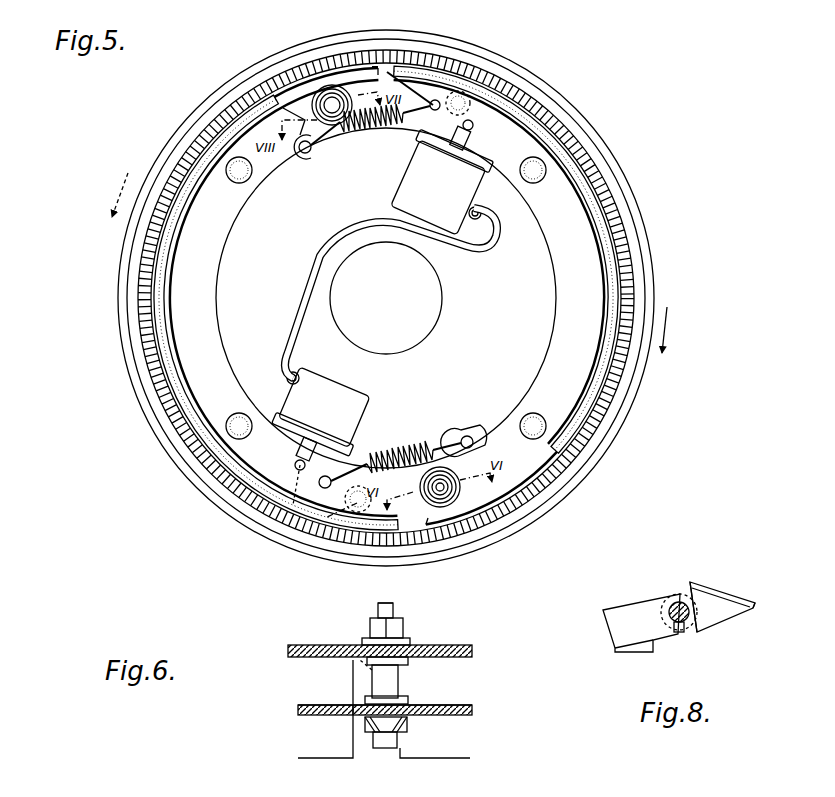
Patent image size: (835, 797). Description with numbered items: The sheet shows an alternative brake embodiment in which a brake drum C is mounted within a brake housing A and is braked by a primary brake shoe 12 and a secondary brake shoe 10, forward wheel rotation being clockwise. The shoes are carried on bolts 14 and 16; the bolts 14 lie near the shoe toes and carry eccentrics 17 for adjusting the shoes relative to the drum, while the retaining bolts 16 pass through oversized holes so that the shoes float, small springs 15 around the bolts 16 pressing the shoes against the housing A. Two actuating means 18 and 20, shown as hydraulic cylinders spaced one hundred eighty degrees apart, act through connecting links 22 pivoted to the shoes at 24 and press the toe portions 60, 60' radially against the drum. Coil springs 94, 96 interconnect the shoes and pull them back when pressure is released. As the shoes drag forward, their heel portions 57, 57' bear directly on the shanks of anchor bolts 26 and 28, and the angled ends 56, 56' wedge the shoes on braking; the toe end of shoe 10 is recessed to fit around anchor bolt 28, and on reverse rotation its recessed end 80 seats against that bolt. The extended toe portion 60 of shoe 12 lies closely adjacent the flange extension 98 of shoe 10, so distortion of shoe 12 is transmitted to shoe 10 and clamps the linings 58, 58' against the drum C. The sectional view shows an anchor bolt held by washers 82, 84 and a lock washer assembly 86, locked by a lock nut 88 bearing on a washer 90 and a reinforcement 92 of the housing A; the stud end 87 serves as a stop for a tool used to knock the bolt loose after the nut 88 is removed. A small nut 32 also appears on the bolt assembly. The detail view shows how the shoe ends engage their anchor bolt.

In FIG. 5, the secondary brake shoe 10 is at (182, 332).
In FIG. 6, the secondary brake shoe 10 is at (330, 760).
In FIG. 8, the secondary brake shoe 10 is at (625, 603).
In FIG. 5, the primary brake shoe 12 is at (583, 227).
In FIG. 6, the primary brake shoe 12 is at (420, 760).
In FIG. 8, the primary brake shoe 12 is at (730, 620).
In FIG. 5, the bolt 14 is at (488, 90).
In FIG. 5, the spring 15 is at (303, 155).
In FIG. 5, the retaining bolt 16 is at (249, 177).
In FIG. 5, the eccentric 17 is at (519, 73).
In FIG. 5, the actuating means 18 is at (444, 175).
In FIG. 5, the actuating means 20 is at (319, 419).
In FIG. 5, the connecting link 22 is at (478, 148).
In FIG. 5, the pivotal connection 24 is at (474, 125).
In FIG. 5, the anchor bolt 26 is at (374, 66).
In FIG. 5, the anchor bolt 28 is at (455, 505).
In FIG. 6, the anchor bolt 28 is at (398, 680).
In FIG. 8, the anchor bolt 28 is at (670, 604).
In FIG. 6, the nut 32 is at (392, 606).
In FIG. 5, the angled end 56 is at (451, 476).
In FIG. 6, the angled end 56 is at (385, 694).
In FIG. 8, the angled end 56 is at (712, 594).
In FIG. 5, the angled end 56' is at (332, 68).
In FIG. 5, the heel portion 57 is at (472, 429).
In FIG. 6, the heel portion 57 is at (385, 724).
In FIG. 8, the heel portion 57 is at (754, 589).
In FIG. 5, the heel portion 57' is at (277, 84).
In FIG. 5, the brake lining 58 is at (409, 298).
In FIG. 5, the brake lining 58' is at (125, 343).
In FIG. 5, the toe portion 60 is at (449, 67).
In FIG. 5, the toe portion 60' is at (407, 532).
In FIG. 6, the toe portion 60' is at (321, 717).
In FIG. 8, the toe portion 60' is at (635, 660).
In FIG. 6, the recessed end 80 is at (365, 722).
In FIG. 8, the recessed end 80 is at (681, 633).
In FIG. 6, the washer 82 is at (372, 670).
In FIG. 6, the washer 84 is at (365, 699).
In FIG. 8, the washer 84 is at (679, 594).
In FIG. 5, the lock washer assembly 86 is at (312, 93).
In FIG. 6, the lock washer assembly 86 is at (366, 735).
In FIG. 6, the end of bolt stud 87 is at (380, 605).
In FIG. 6, the lock nut 88 is at (403, 625).
In FIG. 6, the washer 90 is at (410, 641).
In FIG. 6, the reinforcement 92 is at (362, 645).
In FIG. 5, the coil spring 94 is at (366, 130).
In FIG. 5, the coil spring 96 is at (395, 458).
In FIG. 5, the flange extension 98 is at (388, 70).
In FIG. 5, the brake housing A is at (118, 292).
In FIG. 6, the brake housing A is at (450, 647).
In FIG. 5, the brake drum C is at (630, 262).